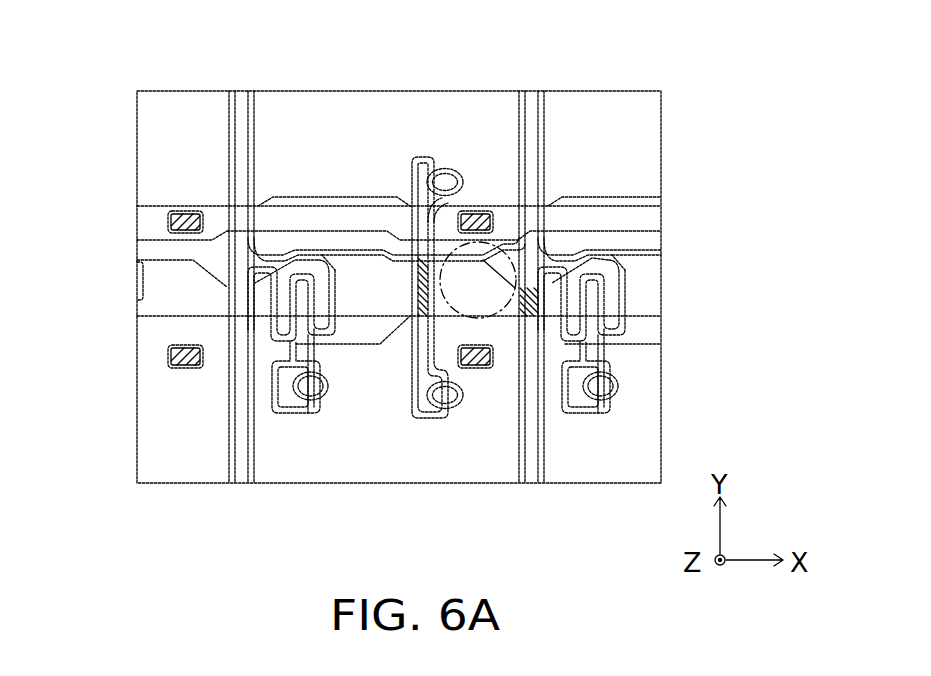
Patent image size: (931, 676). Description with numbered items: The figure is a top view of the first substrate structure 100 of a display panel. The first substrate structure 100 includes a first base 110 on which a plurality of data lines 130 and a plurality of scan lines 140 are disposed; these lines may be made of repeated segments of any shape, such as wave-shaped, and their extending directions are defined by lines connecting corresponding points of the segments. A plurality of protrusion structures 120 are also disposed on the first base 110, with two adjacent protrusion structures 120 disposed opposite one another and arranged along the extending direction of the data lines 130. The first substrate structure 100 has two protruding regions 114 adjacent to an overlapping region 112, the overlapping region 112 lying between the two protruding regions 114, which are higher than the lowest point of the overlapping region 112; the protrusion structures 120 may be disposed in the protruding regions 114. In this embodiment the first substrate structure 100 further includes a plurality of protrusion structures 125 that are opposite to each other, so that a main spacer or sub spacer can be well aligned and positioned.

The first substrate structure 100 is at (138, 77).
The first base 110 is at (352, 113).
The overlapping region 112 is at (490, 256).
The protruding regions 114 is at (330, 289).
The protrusion structures 120 is at (480, 217).
The protrusion structures 125 is at (520, 300).
The data lines 130 is at (240, 113).
The scan lines 140 is at (172, 290).